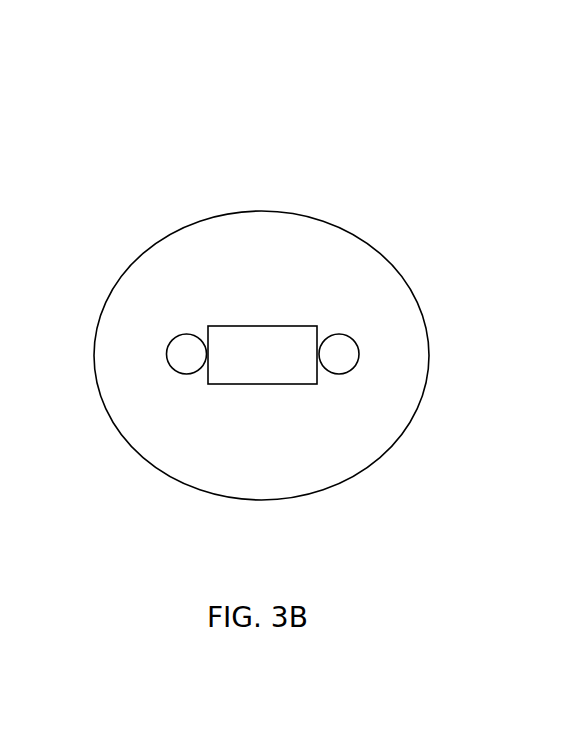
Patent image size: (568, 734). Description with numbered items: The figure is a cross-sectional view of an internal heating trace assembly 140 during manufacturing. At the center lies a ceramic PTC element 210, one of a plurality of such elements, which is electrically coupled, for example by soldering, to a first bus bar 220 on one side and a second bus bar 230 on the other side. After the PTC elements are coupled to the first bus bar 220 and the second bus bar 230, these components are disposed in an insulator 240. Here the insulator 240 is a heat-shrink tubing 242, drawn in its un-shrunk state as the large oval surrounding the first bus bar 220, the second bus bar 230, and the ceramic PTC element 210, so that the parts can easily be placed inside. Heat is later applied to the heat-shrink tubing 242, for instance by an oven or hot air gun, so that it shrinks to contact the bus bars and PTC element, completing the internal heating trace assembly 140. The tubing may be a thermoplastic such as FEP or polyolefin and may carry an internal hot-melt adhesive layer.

The internal heating trace assembly 140 is at (226, 118).
The ceramic PTC element 210 is at (248, 337).
The first bus bar 220 is at (180, 361).
The second bus bar 230 is at (342, 354).
The insulator 240 is at (122, 272).
The heat-shrink tubing 242 is at (180, 229).